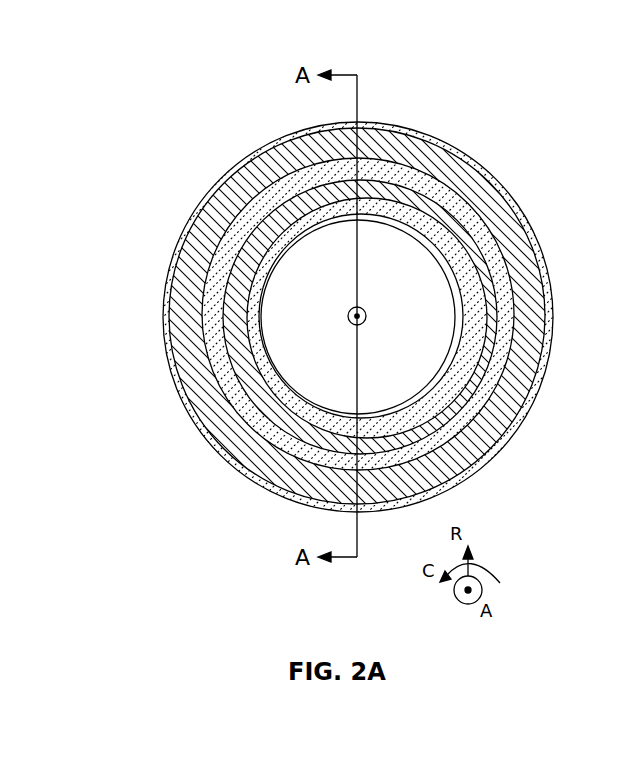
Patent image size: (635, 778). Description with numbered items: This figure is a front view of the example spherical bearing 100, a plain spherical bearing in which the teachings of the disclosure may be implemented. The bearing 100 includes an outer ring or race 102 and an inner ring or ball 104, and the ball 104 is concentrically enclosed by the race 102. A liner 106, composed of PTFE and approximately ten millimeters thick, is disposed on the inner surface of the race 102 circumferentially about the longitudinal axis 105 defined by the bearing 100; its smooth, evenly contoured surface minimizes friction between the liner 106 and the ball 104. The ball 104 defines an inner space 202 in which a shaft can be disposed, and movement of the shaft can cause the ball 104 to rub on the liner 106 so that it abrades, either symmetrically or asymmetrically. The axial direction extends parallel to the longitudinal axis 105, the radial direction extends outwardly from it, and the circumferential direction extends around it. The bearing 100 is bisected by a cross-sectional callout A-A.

The spherical bearing 100 is at (488, 121).
The outer ring 102 is at (481, 186).
The inner ring 104 is at (267, 415).
The longitudinal axis 105 is at (353, 306).
The liner 106 is at (268, 147).
The inner space 202 is at (390, 257).